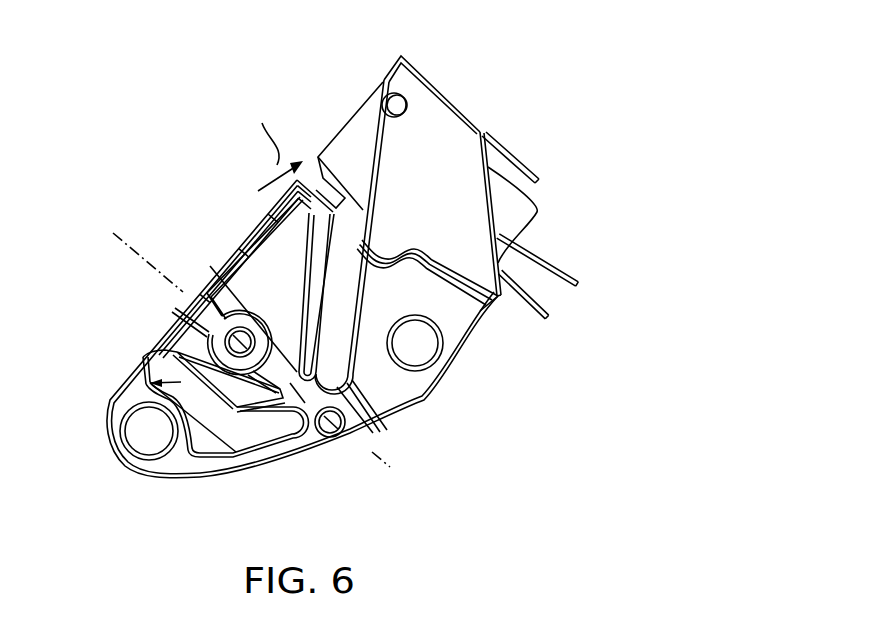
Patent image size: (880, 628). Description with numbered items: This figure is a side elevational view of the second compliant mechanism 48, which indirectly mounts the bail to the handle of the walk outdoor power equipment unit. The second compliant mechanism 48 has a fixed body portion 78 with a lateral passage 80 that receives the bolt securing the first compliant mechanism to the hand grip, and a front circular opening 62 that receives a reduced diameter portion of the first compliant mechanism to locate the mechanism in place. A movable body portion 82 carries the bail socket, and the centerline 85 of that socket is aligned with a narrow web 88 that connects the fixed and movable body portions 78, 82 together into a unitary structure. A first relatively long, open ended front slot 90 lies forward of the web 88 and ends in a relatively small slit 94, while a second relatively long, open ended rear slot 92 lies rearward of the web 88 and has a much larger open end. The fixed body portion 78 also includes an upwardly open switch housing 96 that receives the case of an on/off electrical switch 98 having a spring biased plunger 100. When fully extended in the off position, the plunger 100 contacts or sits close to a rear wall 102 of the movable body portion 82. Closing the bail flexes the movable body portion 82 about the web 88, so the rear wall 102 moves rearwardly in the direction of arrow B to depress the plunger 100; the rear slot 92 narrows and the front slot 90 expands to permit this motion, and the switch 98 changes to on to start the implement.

The second compliant mechanism 48 is at (129, 131).
The front circular opening 62 is at (121, 442).
The fixed body portion 78 is at (395, 397).
The lateral passage 80 is at (418, 343).
The movable body portion 82 is at (247, 234).
The centerline 85 is at (138, 254).
The web 88 is at (303, 405).
The front slot 90 is at (118, 400).
The rear slot 92 is at (347, 287).
The slit 94 is at (144, 357).
The switch housing 96 is at (445, 140).
The switch 98 is at (356, 117).
The plunger 100 is at (325, 183).
The rear wall 102 is at (296, 203).